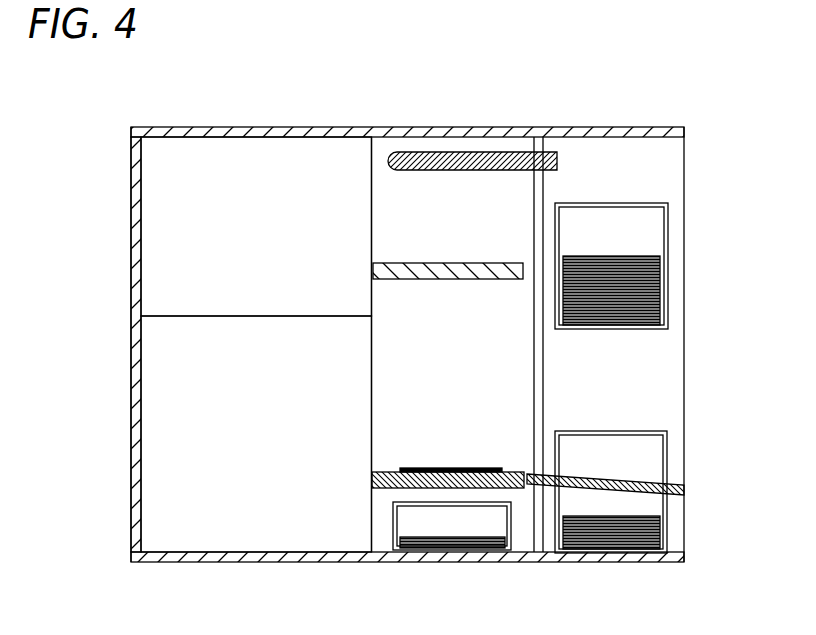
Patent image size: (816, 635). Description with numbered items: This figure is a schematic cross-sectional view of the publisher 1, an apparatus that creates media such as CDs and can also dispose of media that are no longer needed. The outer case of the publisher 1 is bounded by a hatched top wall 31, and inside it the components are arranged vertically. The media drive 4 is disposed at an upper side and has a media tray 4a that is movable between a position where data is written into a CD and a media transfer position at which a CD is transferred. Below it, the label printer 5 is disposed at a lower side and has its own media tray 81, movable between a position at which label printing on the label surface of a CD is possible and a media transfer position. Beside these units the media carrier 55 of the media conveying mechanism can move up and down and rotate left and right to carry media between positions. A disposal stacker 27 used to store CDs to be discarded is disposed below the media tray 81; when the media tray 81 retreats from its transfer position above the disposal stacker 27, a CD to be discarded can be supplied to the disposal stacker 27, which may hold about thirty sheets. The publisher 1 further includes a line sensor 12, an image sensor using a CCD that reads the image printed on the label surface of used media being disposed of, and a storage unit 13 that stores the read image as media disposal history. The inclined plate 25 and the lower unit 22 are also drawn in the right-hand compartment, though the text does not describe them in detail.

The publisher 1 is at (452, 121).
The top wall of case 31 is at (182, 127).
The media drive 4 is at (314, 150).
The media tray 4a is at (434, 263).
The label printer 5 is at (152, 522).
The media carrier 55 is at (504, 152).
The line sensor 12 is at (566, 157).
The storage unit 13 is at (668, 228).
The inclined duct plate 25 is at (674, 480).
The lower fan unit 22 is at (667, 517).
The disposal stacker 27 is at (512, 540).
The media tray 81 is at (384, 490).